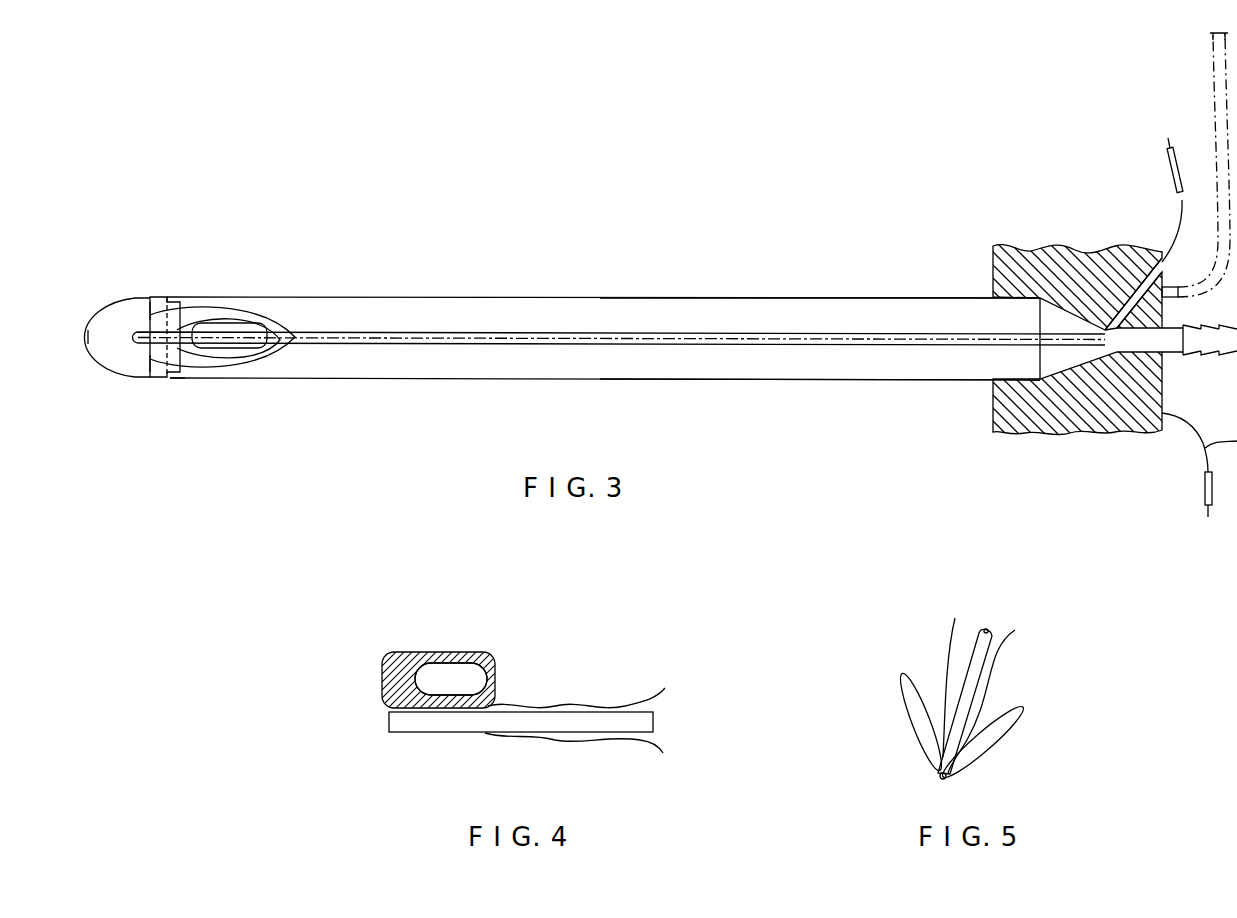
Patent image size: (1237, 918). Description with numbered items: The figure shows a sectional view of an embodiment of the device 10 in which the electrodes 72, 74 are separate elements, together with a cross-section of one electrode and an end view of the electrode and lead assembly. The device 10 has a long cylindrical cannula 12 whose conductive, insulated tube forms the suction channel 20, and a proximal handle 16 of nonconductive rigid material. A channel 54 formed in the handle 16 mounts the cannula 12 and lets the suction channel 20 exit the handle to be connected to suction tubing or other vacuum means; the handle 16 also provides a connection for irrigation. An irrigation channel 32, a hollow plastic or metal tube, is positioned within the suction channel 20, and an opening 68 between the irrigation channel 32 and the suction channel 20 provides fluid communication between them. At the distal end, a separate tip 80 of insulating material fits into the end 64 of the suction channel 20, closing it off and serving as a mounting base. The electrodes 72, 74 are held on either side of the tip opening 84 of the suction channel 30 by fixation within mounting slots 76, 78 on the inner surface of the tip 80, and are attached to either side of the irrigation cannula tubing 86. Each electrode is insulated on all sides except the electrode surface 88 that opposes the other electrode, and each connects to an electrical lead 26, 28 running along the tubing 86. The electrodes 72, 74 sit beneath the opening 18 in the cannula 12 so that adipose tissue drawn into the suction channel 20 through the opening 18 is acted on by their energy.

In FIG. 3, the device 10 is at (637, 237).
In FIG. 3, the cannula 12 is at (392, 297).
In FIG. 3, the handle 16 is at (1122, 428).
In FIG. 3, the opening 18 is at (207, 328).
In FIG. 3, the suction channel 20 is at (848, 365).
In FIG. 3, the electrical lead 26 is at (1182, 207).
In FIG. 4, the electrical lead 26 is at (651, 698).
In FIG. 5, the electrical lead 26 is at (945, 638).
In FIG. 3, the electrical lead 28 is at (1199, 465).
In FIG. 4, the electrical lead 28 is at (663, 753).
In FIG. 5, the electrical lead 28 is at (998, 657).
In FIG. 3, the suction channel 30 is at (1170, 337).
In FIG. 3, the irrigation channel 32 is at (717, 344).
In FIG. 4, the irrigation channel 32 is at (445, 725).
In FIG. 5, the irrigation channel 32 is at (975, 633).
In FIG. 3, the channel 54 is at (1013, 307).
In FIG. 3, the end 64 is at (95, 357).
In FIG. 3, the opening 68 is at (148, 331).
In FIG. 5, the opening 68 is at (938, 778).
In FIG. 3, the electrode 72 is at (253, 314).
In FIG. 4, the electrode 72 is at (420, 658).
In FIG. 3, the electrode 74 is at (257, 358).
In FIG. 3, the mounting slot 76 is at (143, 320).
In FIG. 5, the mounting slot 76 is at (1012, 733).
In FIG. 3, the mounting slot 78 is at (140, 354).
In FIG. 5, the mounting slot 78 is at (902, 695).
In FIG. 3, the tip 80 is at (85, 336).
In FIG. 3, the tip opening 84 is at (163, 380).
In FIG. 3, the irrigation cannula tubing 86 is at (855, 333).
In FIG. 4, the electrode surface 88 is at (475, 675).